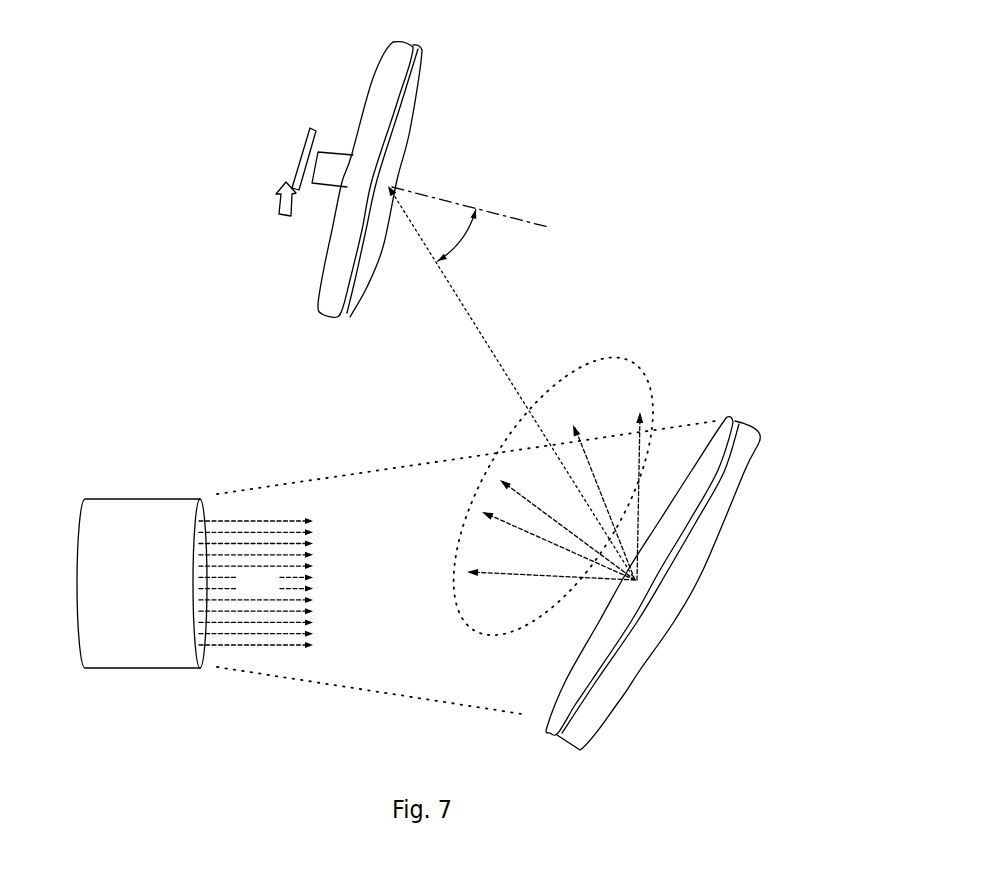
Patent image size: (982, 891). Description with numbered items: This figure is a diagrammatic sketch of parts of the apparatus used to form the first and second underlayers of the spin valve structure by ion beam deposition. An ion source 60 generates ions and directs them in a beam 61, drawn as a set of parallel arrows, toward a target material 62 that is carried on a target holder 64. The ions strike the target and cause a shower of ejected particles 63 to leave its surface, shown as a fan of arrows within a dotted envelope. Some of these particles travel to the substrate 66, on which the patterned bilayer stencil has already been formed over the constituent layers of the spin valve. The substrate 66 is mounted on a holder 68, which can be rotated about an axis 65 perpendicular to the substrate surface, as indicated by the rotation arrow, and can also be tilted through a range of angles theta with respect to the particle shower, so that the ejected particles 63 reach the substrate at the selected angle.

The ion source 60 is at (140, 510).
The ion beam 61 is at (269, 596).
The target material 62 is at (711, 446).
The ejected particles 63 is at (485, 342).
The target holder 64 is at (740, 460).
The rotation axis 65 is at (532, 222).
The substrate 66 is at (403, 117).
The substrate holder 68 is at (372, 117).